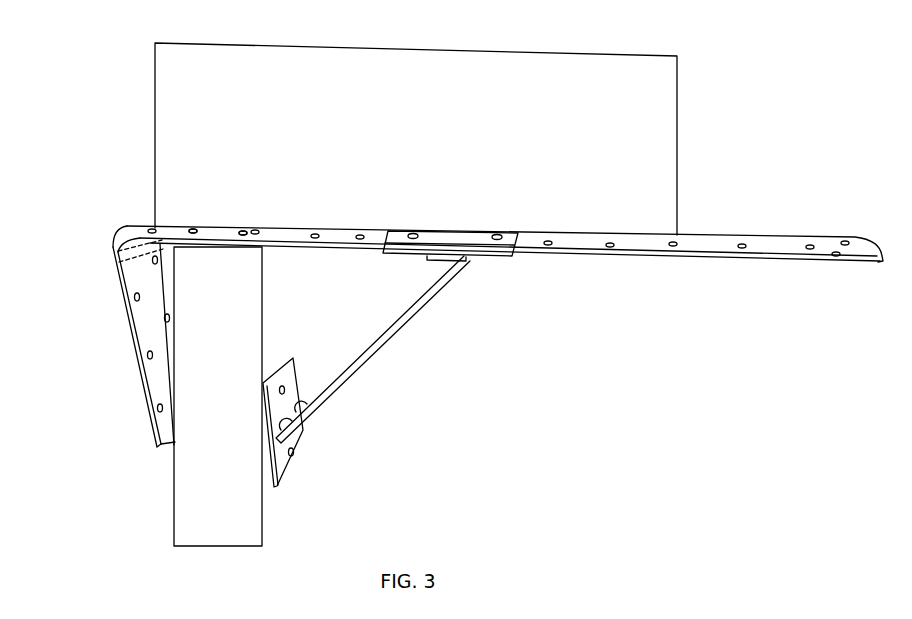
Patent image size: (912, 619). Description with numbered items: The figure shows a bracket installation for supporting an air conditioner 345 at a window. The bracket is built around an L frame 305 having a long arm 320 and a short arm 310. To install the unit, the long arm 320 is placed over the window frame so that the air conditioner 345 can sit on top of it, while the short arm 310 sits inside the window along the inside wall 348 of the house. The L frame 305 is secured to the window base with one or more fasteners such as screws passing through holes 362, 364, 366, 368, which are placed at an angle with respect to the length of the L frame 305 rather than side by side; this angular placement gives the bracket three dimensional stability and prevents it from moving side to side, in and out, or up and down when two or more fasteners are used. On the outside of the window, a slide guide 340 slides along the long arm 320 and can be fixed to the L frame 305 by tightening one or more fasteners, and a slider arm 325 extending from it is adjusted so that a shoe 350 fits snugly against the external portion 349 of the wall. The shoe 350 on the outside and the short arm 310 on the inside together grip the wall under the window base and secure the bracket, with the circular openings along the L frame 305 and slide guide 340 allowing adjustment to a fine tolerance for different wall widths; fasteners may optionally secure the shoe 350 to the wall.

The L frame 305 is at (126, 218).
The short arm 310 is at (141, 420).
The long arm 320 is at (713, 270).
The slider arm 325 is at (439, 306).
The slide guide 340 is at (507, 260).
The air conditioner 345 is at (677, 140).
The inside wall 348 is at (158, 520).
The external portion of the wall 349 is at (284, 493).
The shoe 350 is at (307, 444).
The hole 362 is at (152, 243).
The hole 364 is at (178, 213).
The hole 366 is at (211, 220).
The hole 368 is at (265, 236).